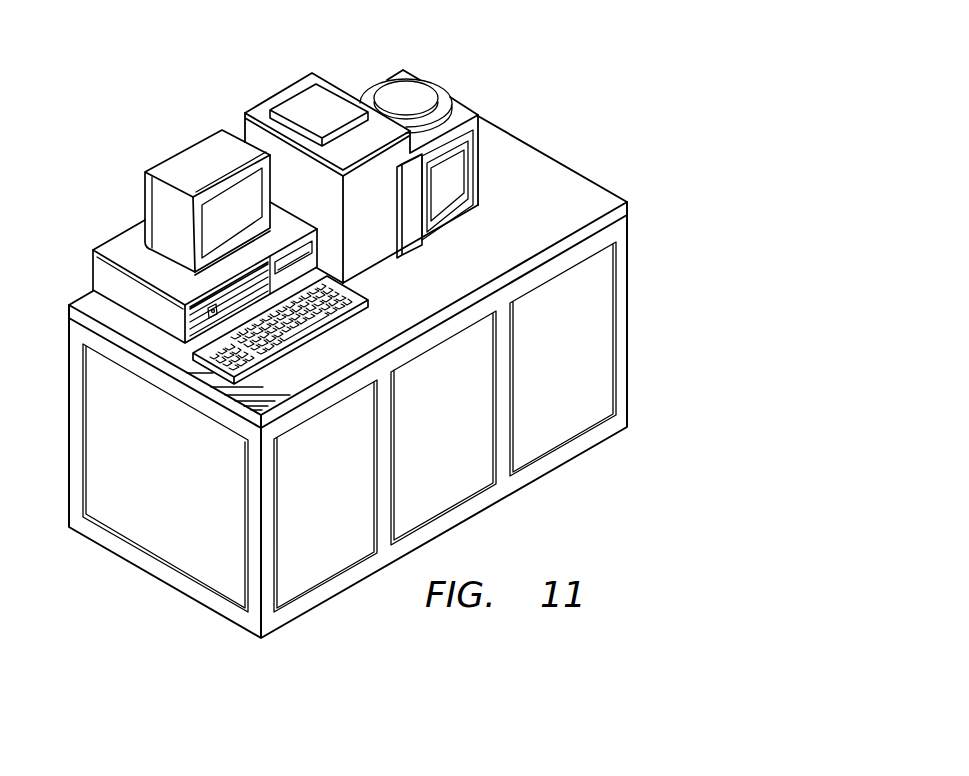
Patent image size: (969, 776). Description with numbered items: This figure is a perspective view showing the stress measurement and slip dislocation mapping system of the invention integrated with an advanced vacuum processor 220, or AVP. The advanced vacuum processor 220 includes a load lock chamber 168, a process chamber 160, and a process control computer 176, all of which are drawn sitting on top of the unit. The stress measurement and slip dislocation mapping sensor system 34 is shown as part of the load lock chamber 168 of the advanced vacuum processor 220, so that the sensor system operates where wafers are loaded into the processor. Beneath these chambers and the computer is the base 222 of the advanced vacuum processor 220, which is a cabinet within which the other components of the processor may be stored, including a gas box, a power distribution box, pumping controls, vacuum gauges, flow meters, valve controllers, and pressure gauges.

The stress measurement and slip dislocation mapping sensor system 34 is at (302, 102).
The process chamber 160 is at (395, 180).
The load lock chamber 168 is at (384, 262).
The process control computer 176 is at (140, 190).
The advanced vacuum processor 220 is at (648, 128).
The base 222 is at (573, 458).